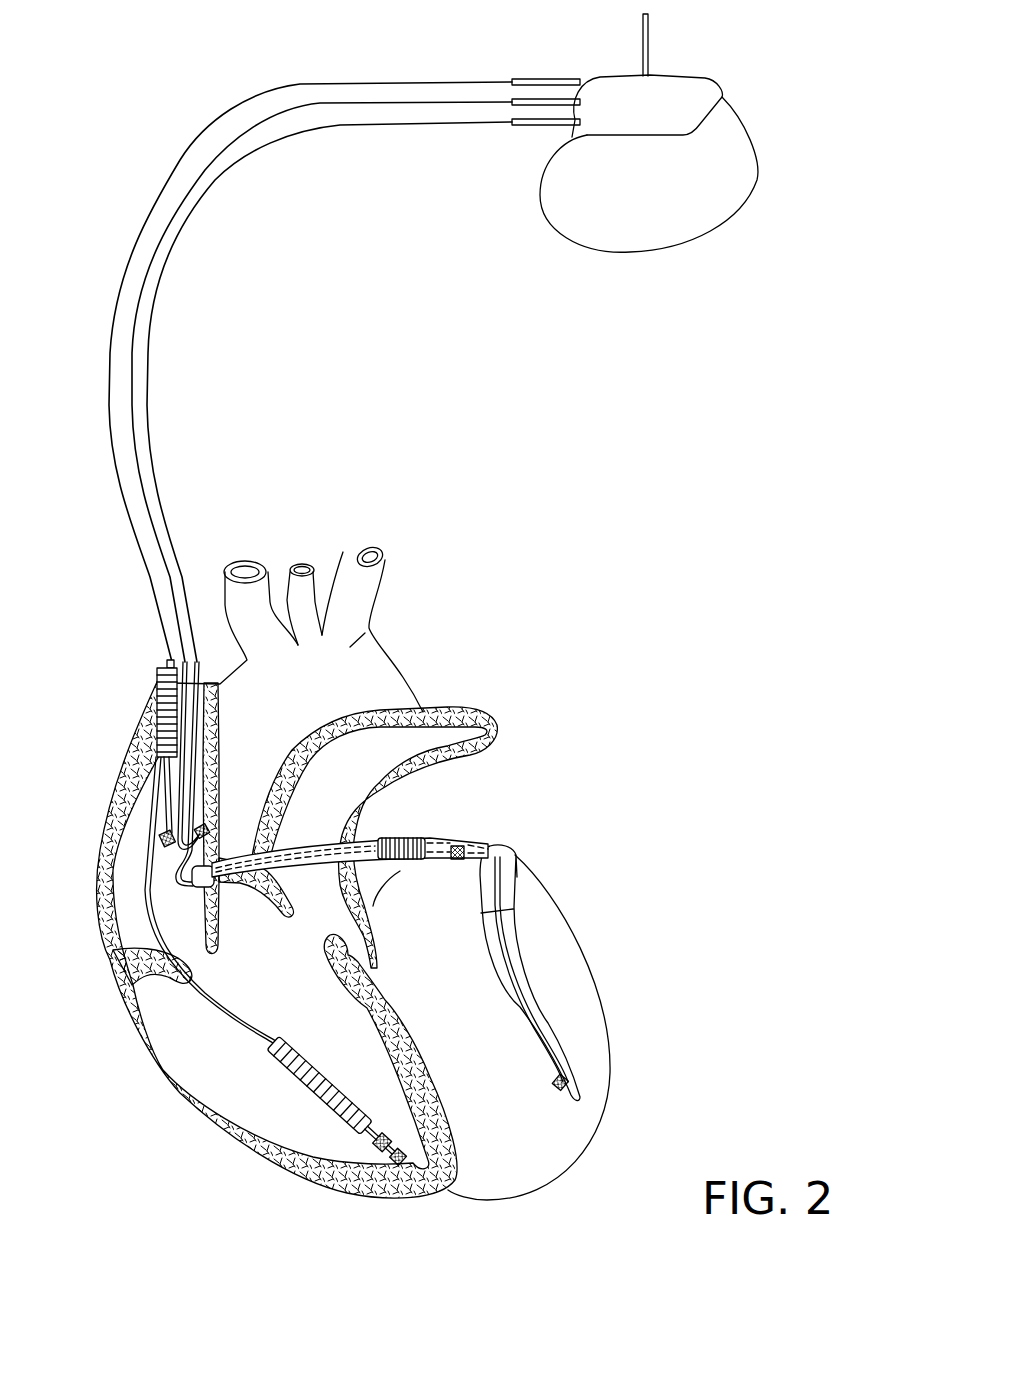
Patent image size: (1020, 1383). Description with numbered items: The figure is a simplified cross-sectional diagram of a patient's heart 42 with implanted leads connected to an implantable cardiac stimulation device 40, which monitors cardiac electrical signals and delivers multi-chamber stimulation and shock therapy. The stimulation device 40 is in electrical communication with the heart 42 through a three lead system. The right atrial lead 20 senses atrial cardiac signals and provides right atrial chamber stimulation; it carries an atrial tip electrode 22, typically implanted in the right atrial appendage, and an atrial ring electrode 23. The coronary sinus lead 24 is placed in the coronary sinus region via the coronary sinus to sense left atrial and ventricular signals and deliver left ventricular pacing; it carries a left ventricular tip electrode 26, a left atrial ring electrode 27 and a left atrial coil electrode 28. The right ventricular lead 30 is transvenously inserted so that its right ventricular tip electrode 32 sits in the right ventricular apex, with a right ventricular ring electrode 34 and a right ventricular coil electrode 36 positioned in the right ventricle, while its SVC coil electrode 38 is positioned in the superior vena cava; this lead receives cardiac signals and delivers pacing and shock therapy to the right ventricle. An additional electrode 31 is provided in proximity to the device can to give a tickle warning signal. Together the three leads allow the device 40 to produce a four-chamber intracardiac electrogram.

The right atrial lead 20 is at (367, 102).
The atrial tip electrode 22 is at (206, 830).
The atrial ring electrode 23 is at (160, 840).
The coronary sinus lead 24 is at (320, 127).
The left ventricular tip electrode 26 is at (578, 1083).
The left atrial ring electrode 27 is at (460, 846).
The left atrial coil electrode 28 is at (407, 838).
The right ventricular lead 30 is at (428, 83).
The additional electrode 31 is at (645, 42).
The right ventricular tip electrode 32 is at (407, 1165).
The right ventricular ring electrode 34 is at (373, 1148).
The right ventricular coil electrode 36 is at (320, 1107).
The SVC coil electrode 38 is at (160, 674).
The implantable cardiac stimulation device 40 is at (723, 150).
The heart 42 is at (567, 1143).